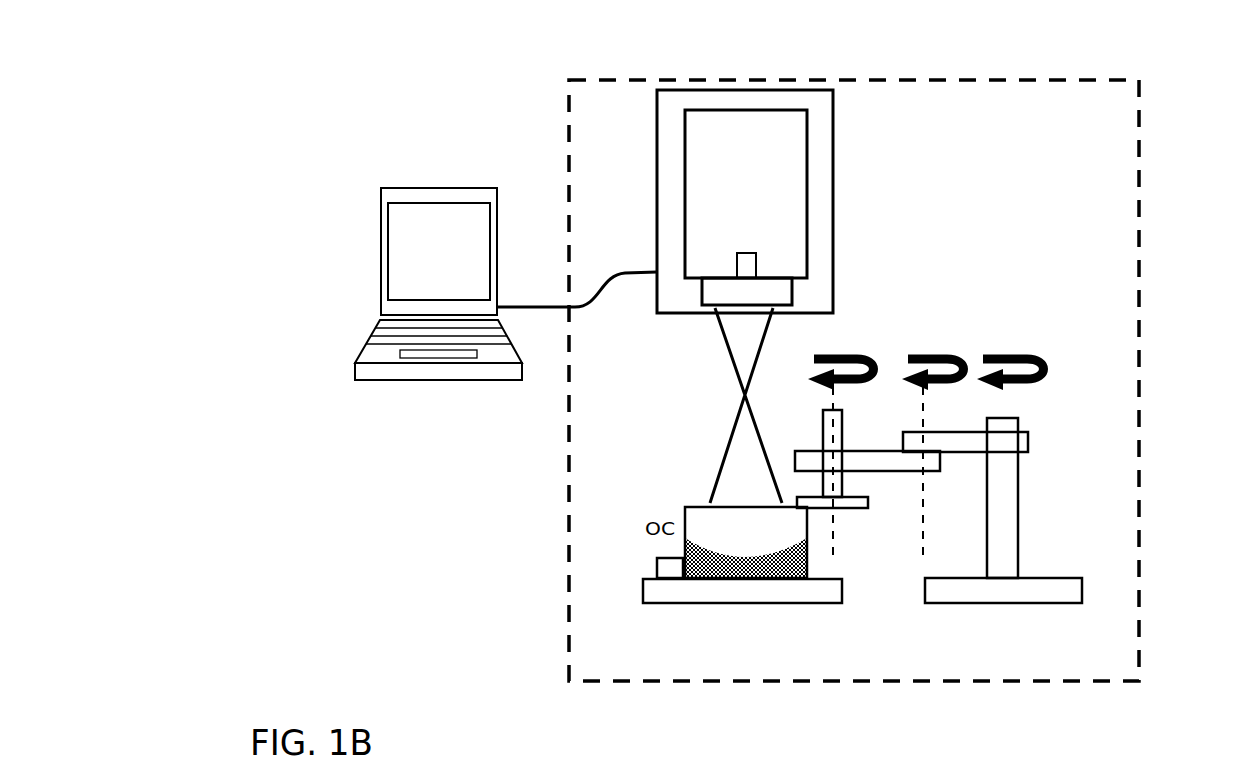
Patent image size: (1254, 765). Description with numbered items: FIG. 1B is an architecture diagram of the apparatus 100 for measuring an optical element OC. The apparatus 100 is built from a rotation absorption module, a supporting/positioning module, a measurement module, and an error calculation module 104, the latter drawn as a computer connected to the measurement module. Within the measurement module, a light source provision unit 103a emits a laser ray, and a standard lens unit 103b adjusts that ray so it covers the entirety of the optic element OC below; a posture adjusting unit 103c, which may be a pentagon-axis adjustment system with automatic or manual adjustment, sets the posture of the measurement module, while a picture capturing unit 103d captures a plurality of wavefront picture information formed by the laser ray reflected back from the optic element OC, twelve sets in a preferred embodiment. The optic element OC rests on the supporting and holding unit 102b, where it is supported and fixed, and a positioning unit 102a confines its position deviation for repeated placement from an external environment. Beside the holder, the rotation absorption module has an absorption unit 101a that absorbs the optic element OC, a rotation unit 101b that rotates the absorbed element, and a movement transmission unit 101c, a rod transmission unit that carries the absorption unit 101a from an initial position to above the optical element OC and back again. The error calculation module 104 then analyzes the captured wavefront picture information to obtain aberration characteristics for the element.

The apparatus 100 is at (1129, 36).
The error calculation module 104 is at (413, 188).
The picture capturing unit 103d is at (757, 125).
The posture adjusting unit 103c is at (833, 253).
The light source provision unit 103a is at (758, 263).
The standard lens unit 103b is at (797, 297).
The positioning unit 102a is at (657, 562).
The supporting and holding unit 102b is at (727, 597).
The absorption unit 101a is at (800, 497).
The rotation unit 101b is at (843, 437).
The movement transmission unit 101c is at (1018, 535).